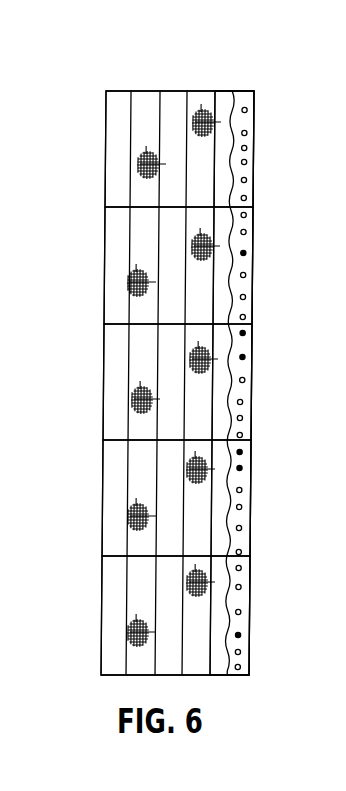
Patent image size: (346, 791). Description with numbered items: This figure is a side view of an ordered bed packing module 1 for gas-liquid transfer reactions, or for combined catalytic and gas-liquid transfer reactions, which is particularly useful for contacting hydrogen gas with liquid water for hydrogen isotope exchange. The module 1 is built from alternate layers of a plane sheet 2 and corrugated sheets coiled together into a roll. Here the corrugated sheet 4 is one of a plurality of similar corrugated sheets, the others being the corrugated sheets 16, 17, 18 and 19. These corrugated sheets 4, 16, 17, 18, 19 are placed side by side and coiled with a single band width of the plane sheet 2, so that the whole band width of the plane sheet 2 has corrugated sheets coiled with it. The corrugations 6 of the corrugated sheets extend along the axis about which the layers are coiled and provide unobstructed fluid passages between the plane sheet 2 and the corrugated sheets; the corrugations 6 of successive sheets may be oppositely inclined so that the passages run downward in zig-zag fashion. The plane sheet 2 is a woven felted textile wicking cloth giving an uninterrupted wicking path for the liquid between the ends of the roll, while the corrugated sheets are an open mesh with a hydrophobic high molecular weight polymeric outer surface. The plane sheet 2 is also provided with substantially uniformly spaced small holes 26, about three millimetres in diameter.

The ordered bed packing module 1 is at (100, 421).
The plane sheet 2 is at (240, 452).
The corrugated sheet 4 is at (120, 161).
The corrugations 6 is at (170, 104).
The corrugated sheet 16 is at (118, 256).
The corrugated sheet 17 is at (120, 376).
The corrugated sheet 18 is at (118, 510).
The corrugated sheet 19 is at (113, 615).
The small holes 26 is at (255, 207).